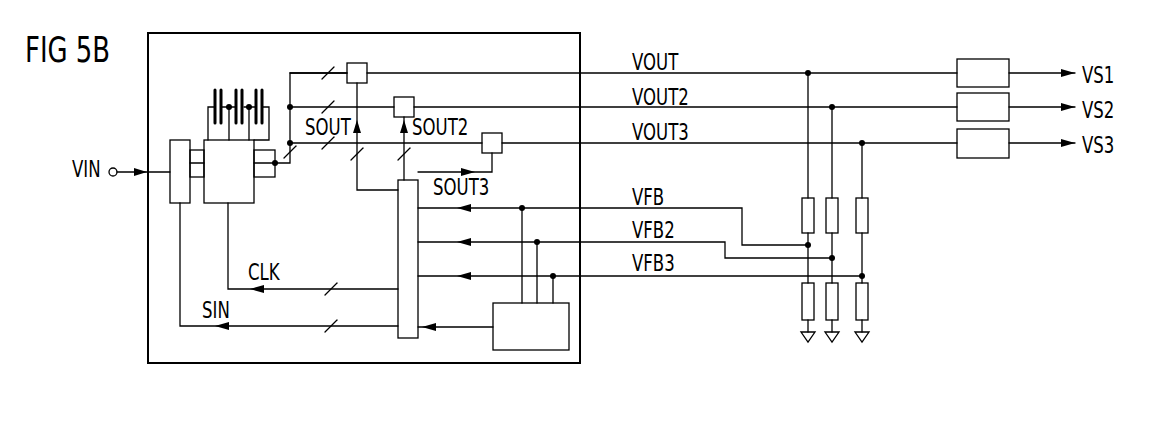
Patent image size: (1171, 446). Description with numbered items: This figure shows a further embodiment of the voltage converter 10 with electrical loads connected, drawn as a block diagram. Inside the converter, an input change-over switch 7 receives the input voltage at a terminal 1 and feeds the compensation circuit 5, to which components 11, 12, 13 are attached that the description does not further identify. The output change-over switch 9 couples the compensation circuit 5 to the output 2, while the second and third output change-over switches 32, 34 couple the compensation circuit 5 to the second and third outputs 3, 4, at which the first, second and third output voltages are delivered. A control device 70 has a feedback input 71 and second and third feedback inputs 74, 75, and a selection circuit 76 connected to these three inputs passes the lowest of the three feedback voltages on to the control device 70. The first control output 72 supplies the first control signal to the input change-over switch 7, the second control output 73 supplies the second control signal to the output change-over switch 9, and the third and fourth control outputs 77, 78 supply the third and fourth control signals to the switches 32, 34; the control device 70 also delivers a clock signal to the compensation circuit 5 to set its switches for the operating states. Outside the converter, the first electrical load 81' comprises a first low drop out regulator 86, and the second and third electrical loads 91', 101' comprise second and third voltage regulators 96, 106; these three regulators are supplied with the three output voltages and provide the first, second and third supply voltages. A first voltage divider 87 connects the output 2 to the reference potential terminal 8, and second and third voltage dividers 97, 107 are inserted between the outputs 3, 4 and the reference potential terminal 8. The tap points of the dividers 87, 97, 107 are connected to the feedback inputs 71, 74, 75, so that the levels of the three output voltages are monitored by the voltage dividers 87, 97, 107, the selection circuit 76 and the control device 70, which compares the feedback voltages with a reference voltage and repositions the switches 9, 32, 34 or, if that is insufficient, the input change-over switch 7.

The input terminal 1 is at (113, 167).
The output 2 is at (580, 73).
The second output 3 is at (580, 107).
The third output 4 is at (580, 143).
The compensation circuit 5 is at (219, 204).
The input change-over switch 7 is at (182, 140).
The reference potential terminal 8 is at (865, 341).
The output change-over switch 9 is at (367, 68).
The voltage converter 10 is at (148, 275).
The first capacitor 11 is at (215, 89).
The second capacitor 12 is at (237, 89).
The third capacitor 13 is at (259, 89).
The second output change-over switch 32 is at (414, 104).
The third output change-over switch 34 is at (502, 150).
The control device 70 is at (398, 258).
The feedback input 71 is at (422, 210).
The first control output 72 is at (398, 335).
The second control output 73 is at (398, 195).
The second feedback input 74 is at (425, 244).
The third feedback input 75 is at (425, 279).
The selection circuit 76 is at (492, 333).
The third control output 77 is at (405, 178).
The fourth control output 78 is at (410, 180).
The first electrical load 81' is at (956, 62).
The second electrical load 91' is at (956, 97).
The third electrical load 101' is at (951, 134).
The first low drop out regulator 86 is at (1009, 82).
The second voltage regulator 96 is at (1009, 117).
The third voltage regulator 106 is at (1009, 152).
The first voltage divider 87 is at (805, 198).
The second voltage divider 97 is at (835, 198).
The third voltage divider 107 is at (870, 297).